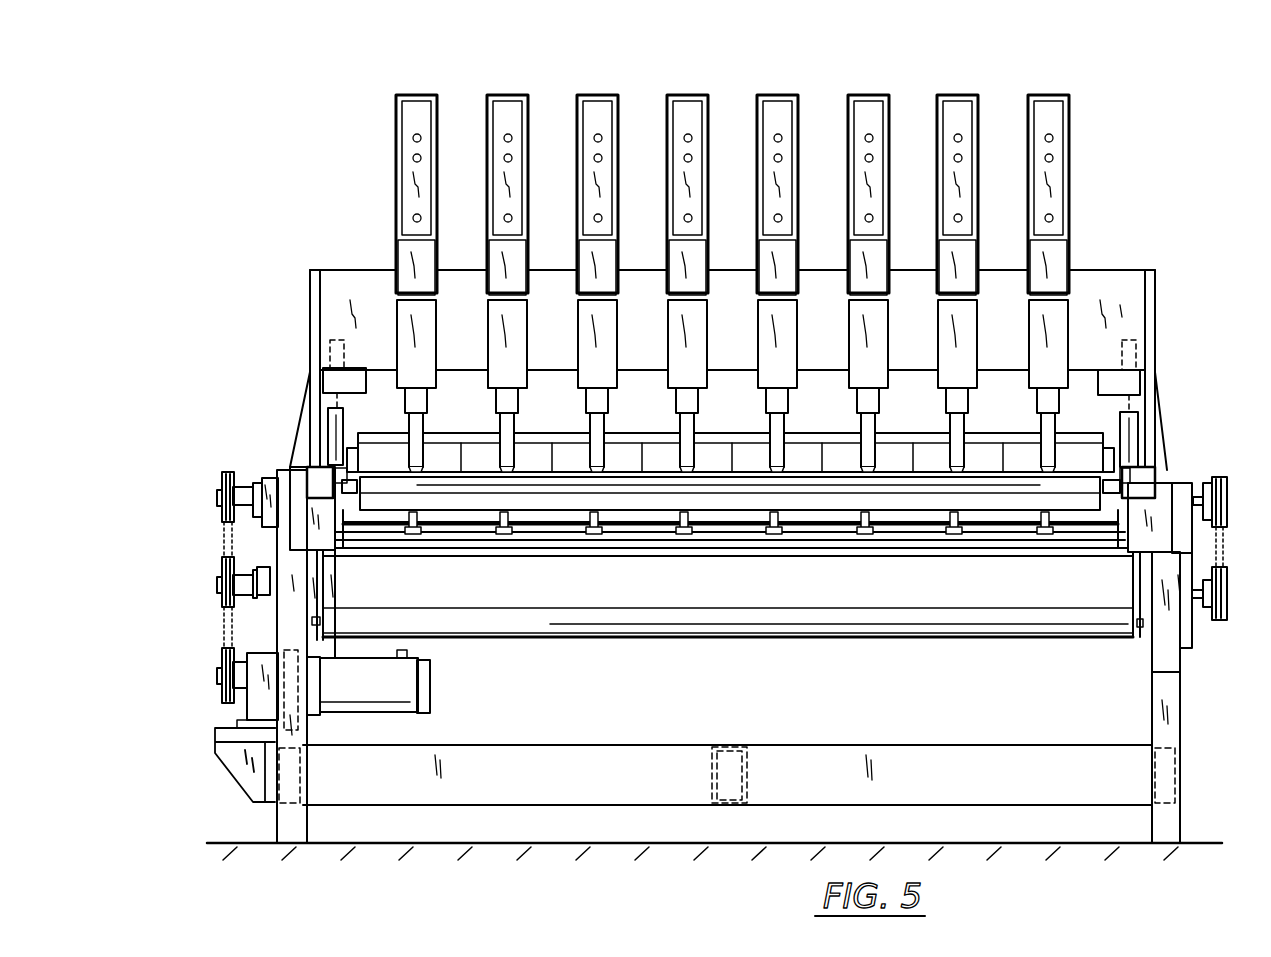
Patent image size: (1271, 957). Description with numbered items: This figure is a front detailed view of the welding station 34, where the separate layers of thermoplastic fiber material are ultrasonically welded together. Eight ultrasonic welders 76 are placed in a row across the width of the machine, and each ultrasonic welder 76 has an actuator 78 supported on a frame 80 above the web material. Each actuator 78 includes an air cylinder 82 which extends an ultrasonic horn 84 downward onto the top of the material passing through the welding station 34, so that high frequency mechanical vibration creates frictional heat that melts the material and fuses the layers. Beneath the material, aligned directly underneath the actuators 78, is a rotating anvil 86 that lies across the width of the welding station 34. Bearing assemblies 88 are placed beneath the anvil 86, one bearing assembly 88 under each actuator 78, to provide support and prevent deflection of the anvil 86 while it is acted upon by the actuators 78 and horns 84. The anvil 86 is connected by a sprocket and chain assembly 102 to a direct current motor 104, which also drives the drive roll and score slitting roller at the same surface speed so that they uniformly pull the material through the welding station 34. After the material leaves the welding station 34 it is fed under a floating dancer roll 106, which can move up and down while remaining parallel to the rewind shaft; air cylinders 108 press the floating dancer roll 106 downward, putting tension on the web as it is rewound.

The welding station 34 is at (290, 376).
The ultrasonic welder 76 is at (489, 95).
The actuator 78 is at (527, 318).
The frame 80 is at (311, 275).
The air cylinder 82 is at (509, 400).
The ultrasonic horn 84 is at (566, 447).
The rotating anvil 86 is at (1090, 527).
The bearing assembly 88 is at (497, 531).
The sprocket and chain assembly 102 is at (205, 629).
The direct current motor 104 is at (428, 684).
The floating dancer roll 106 is at (823, 628).
The air cylinder 108 is at (323, 594).